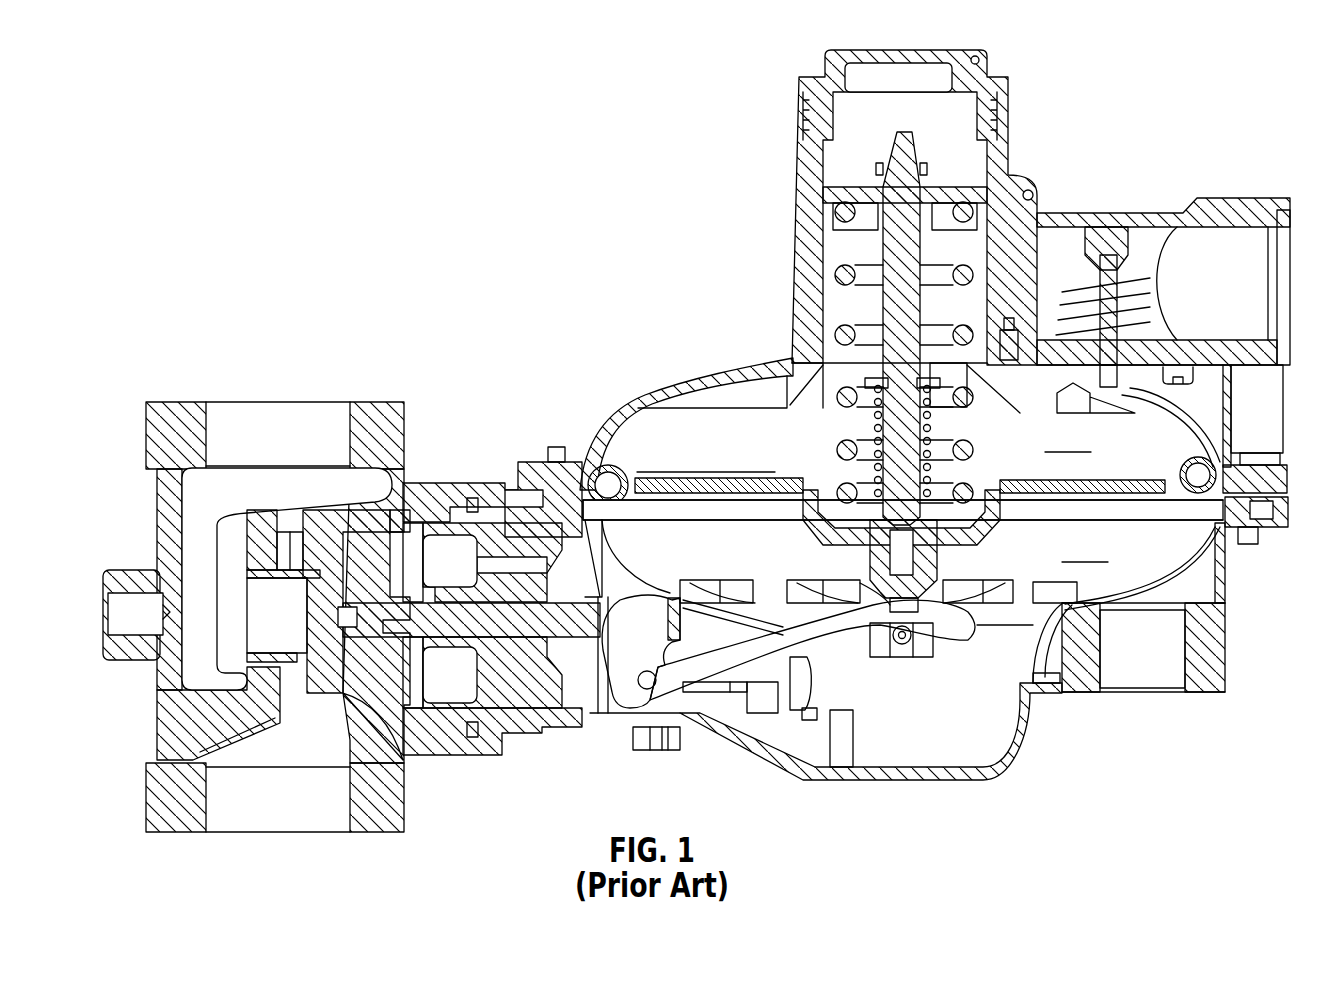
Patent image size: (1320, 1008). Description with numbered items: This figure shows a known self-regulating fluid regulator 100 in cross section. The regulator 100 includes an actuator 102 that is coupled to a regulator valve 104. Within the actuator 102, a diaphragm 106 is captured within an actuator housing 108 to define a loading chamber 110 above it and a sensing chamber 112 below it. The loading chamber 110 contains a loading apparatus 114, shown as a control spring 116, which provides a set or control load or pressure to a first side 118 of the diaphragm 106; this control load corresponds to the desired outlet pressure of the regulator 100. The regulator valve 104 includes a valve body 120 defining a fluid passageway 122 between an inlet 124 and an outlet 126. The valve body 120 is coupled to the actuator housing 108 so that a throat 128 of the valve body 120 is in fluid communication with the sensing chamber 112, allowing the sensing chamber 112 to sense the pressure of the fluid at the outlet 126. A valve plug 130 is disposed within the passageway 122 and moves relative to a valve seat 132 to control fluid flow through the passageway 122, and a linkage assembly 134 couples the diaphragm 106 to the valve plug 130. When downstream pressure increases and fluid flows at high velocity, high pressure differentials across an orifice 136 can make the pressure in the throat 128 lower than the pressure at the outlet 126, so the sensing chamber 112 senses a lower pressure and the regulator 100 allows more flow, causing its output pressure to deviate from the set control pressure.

The self-regulating fluid regulator 100 is at (315, 58).
The actuator 102 is at (686, 136).
The regulator valve 104 is at (464, 340).
The diaphragm 106 is at (722, 475).
The actuator housing 108 is at (730, 380).
The loading chamber 110 is at (940, 409).
The sensing chamber 112 is at (936, 638).
The loading apparatus 114 is at (853, 298).
The control spring 116 is at (835, 268).
The first side of the diaphragm 118 is at (1190, 465).
The valve body 120 is at (147, 478).
The fluid passageway 122 is at (290, 748).
The inlet 124 is at (318, 400).
The outlet 126 is at (250, 835).
The throat 128 is at (398, 545).
The valve plug 130 is at (438, 752).
The valve seat 132 is at (285, 512).
The linkage assembly 134 is at (884, 683).
The orifice 136 is at (240, 622).